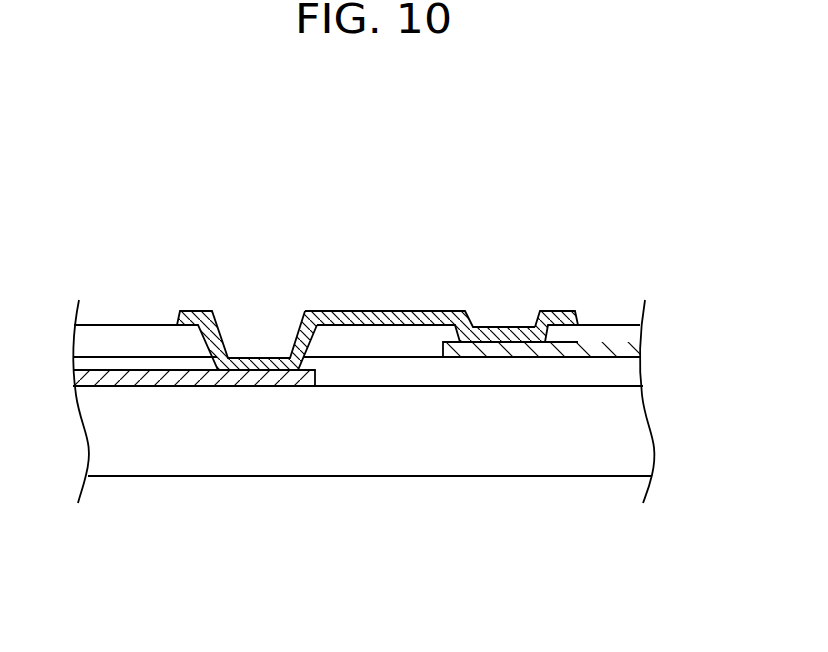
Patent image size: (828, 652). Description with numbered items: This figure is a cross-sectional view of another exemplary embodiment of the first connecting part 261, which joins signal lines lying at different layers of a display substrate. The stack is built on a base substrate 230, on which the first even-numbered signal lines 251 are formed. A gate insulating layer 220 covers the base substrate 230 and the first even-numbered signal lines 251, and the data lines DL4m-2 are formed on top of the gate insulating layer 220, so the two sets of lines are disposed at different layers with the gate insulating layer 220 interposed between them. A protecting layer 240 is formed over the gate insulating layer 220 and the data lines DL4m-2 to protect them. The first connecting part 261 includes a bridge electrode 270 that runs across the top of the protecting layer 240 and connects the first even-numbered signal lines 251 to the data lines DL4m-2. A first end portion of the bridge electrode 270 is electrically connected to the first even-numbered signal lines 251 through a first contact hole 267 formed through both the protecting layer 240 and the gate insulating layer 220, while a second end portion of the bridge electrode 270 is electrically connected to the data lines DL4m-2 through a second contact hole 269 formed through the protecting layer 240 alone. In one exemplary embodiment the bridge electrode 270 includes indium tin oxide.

The base substrate 230 is at (623, 437).
The gate insulating layer 220 is at (557, 367).
The protecting layer 240 is at (131, 343).
The first even-numbered signal lines 251 is at (210, 378).
The (4m−2)-th data lines DL4m-2 is at (483, 350).
The first connecting part 261 is at (392, 299).
The first contact hole 267 is at (260, 314).
The second contact hole 269 is at (502, 314).
The bridge electrode 270 is at (383, 322).